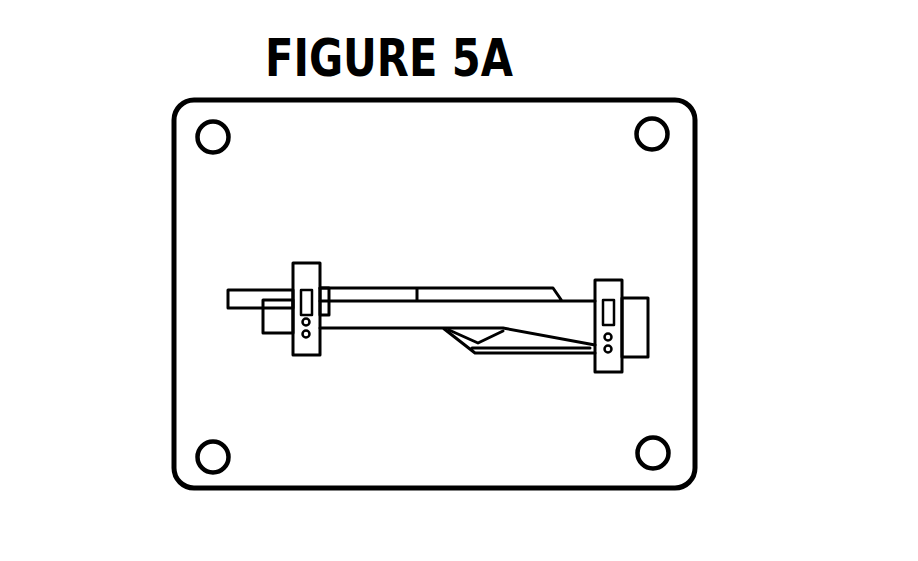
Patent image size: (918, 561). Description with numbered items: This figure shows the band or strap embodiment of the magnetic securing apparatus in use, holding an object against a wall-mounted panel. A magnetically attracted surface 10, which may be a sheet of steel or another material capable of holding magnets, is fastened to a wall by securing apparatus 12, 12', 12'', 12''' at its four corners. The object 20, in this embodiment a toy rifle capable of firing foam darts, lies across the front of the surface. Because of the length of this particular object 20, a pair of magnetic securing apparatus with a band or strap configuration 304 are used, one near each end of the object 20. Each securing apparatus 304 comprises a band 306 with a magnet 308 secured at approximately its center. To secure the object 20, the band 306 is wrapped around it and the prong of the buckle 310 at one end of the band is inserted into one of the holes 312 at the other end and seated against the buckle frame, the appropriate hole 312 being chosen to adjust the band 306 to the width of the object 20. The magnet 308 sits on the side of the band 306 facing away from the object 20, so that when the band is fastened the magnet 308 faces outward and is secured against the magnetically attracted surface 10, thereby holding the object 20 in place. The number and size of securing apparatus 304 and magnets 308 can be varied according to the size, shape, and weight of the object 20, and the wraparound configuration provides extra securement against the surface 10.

The magnetically attracted surface 10 is at (360, 468).
The securing apparatus 12 is at (162, 122).
The securing apparatus 12' is at (167, 443).
The securing apparatus 12'' is at (712, 118).
The securing apparatus 12''' is at (717, 437).
The object 20 is at (380, 318).
The magnetic securing apparatus with a band or strap configuration 304 is at (290, 259).
The band 306 is at (293, 273).
The magnet 308 is at (293, 290).
The buckle 310 is at (293, 317).
The holes 312 is at (293, 340).